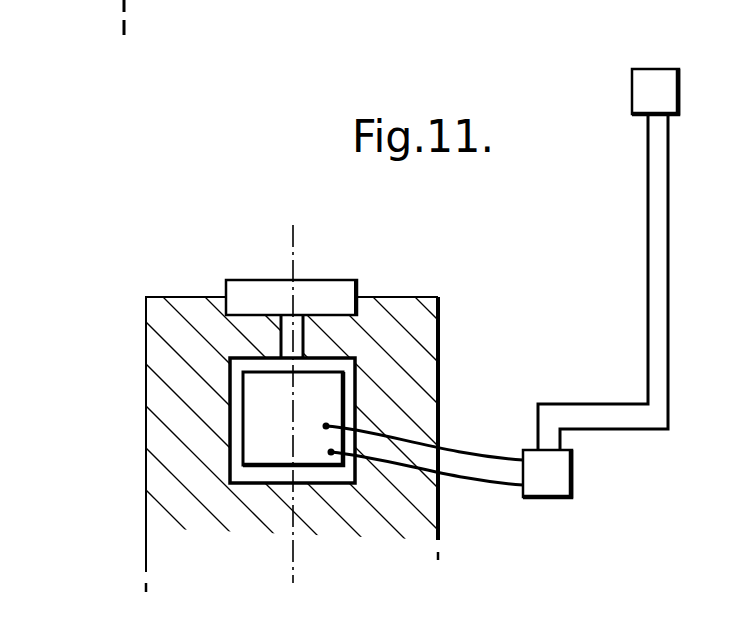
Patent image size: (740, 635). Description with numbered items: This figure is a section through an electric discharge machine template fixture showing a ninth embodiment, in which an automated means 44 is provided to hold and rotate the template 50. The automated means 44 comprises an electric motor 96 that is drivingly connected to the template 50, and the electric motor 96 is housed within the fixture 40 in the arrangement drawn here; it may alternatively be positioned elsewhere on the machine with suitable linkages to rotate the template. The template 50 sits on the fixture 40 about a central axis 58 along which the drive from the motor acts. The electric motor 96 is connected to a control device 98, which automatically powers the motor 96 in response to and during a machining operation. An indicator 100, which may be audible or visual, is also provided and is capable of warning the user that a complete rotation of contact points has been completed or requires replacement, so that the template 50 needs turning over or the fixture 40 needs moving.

The fixture 40 is at (425, 376).
The automated means 44 is at (488, 307).
The template 50 is at (266, 290).
The central axis 58 is at (298, 256).
The electric motor 96 is at (262, 411).
The control device 98 is at (542, 482).
The indicator 100 is at (651, 83).